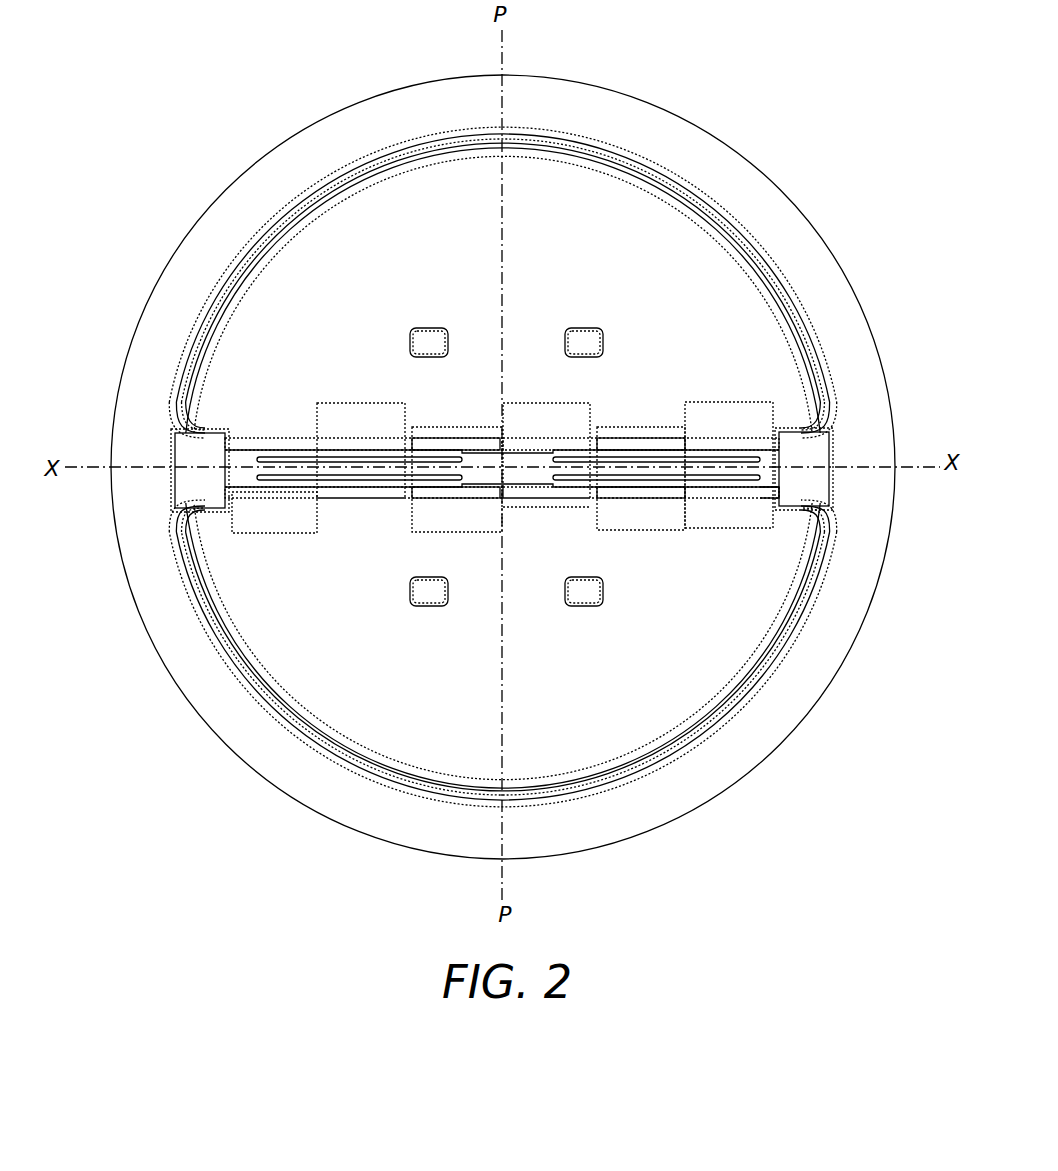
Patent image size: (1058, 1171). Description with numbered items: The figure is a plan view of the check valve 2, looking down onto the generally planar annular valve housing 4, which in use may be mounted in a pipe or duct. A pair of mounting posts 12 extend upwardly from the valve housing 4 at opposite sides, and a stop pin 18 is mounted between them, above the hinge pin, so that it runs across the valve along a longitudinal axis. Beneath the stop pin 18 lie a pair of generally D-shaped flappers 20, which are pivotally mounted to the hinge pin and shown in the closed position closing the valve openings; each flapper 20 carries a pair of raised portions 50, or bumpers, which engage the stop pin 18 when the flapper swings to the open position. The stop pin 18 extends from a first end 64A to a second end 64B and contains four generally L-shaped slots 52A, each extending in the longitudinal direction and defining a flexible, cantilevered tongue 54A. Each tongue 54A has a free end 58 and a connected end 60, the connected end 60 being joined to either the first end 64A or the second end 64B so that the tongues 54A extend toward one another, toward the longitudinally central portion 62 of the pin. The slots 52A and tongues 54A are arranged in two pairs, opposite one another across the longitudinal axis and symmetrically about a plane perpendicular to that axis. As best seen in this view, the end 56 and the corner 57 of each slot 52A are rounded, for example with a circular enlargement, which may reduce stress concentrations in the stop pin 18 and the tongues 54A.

The check valve 2 is at (744, 92).
The valve housing 4 is at (826, 266).
The mounting posts 12 is at (188, 486).
The stop pin 18 is at (366, 450).
The flappers 20 is at (384, 224).
The raised portions 50 is at (429, 338).
The slots 52A is at (652, 470).
The tongues 54A is at (655, 482).
The end of slot 56 is at (268, 490).
The corner of slot 57 is at (458, 500).
The free end 58 is at (567, 492).
The connected end 60 is at (770, 496).
The longitudinally central portion 62 is at (484, 458).
The first end 64A is at (762, 448).
The second end 64B is at (250, 458).